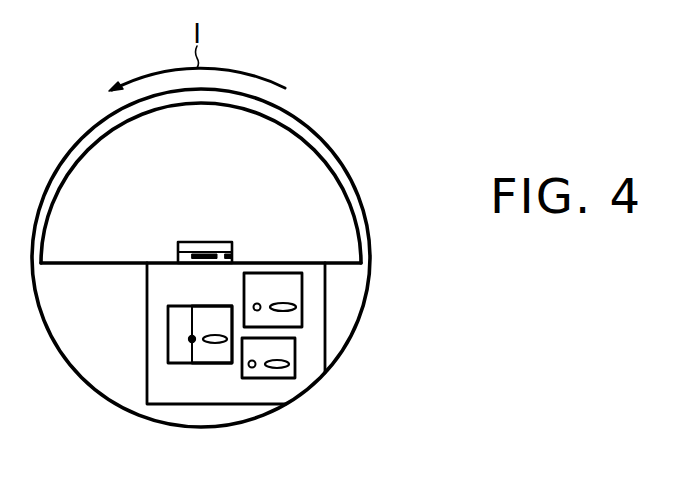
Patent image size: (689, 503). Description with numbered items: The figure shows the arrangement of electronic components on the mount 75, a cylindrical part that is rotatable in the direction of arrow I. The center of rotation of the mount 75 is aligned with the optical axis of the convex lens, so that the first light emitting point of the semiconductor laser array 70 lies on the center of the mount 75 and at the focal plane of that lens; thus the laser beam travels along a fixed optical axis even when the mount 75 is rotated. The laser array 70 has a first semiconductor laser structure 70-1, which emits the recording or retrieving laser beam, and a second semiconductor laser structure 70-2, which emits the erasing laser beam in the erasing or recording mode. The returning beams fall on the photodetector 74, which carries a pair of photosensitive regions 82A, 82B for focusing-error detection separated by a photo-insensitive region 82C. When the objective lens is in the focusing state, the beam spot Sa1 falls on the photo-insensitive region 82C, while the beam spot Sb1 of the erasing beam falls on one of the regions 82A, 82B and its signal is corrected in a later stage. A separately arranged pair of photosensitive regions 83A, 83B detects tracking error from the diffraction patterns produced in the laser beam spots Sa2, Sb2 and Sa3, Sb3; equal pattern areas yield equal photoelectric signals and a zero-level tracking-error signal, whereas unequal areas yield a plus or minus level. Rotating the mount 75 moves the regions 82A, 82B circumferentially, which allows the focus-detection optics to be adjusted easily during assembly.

The semiconductor laser array 70 is at (200, 242).
The first semiconductor laser structure 70-1 is at (185, 242).
The second semiconductor laser structure 70-2 is at (229, 242).
The photodetector 74 is at (147, 285).
The mount 75 is at (358, 206).
The photosensitive region 82A is at (182, 313).
The photosensitive region 82B is at (215, 313).
The photo-insensitive region 82C is at (191, 342).
The photosensitive region 83A is at (249, 380).
The photosensitive region 83B is at (302, 292).
The beam spot Sa1 is at (192, 339).
The beam spot Sb1 is at (212, 343).
The laser beam spot Sa2 is at (252, 368).
The laser beam spot Sb2 is at (289, 364).
The laser beam spot Sa3 is at (257, 303).
The laser beam spot Sb3 is at (283, 302).